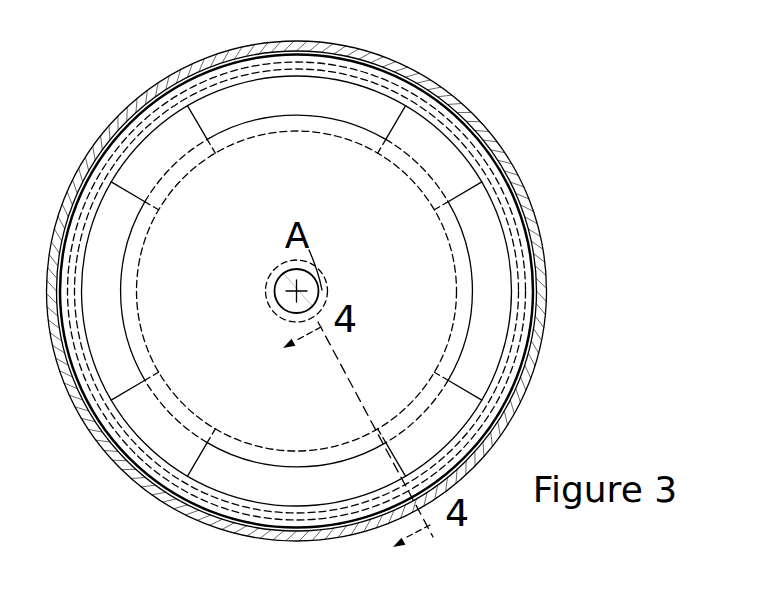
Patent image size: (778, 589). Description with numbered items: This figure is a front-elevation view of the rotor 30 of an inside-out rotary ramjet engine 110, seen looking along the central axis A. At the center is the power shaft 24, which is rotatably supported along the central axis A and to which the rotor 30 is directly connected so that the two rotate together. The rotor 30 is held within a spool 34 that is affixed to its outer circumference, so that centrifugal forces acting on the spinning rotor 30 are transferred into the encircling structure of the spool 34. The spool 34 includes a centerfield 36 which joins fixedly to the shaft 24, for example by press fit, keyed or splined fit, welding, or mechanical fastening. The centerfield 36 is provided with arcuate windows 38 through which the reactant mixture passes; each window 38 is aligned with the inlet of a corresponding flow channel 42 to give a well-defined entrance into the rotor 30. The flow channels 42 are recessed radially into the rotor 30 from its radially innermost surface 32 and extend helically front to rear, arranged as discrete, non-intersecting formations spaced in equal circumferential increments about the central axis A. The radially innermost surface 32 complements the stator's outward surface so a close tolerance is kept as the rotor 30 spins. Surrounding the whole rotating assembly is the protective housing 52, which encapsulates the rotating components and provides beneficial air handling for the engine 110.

The rotary ramjet engine 110 is at (526, 149).
The protective housing 52 is at (153, 486).
The spool 34 is at (140, 108).
The centerfield 36 is at (440, 107).
The rotor 30 is at (335, 92).
The radially innermost surface 32 is at (172, 186).
The flow channel 42 is at (258, 128).
The arcuate window 38 is at (196, 121).
The power shaft 24 is at (322, 290).